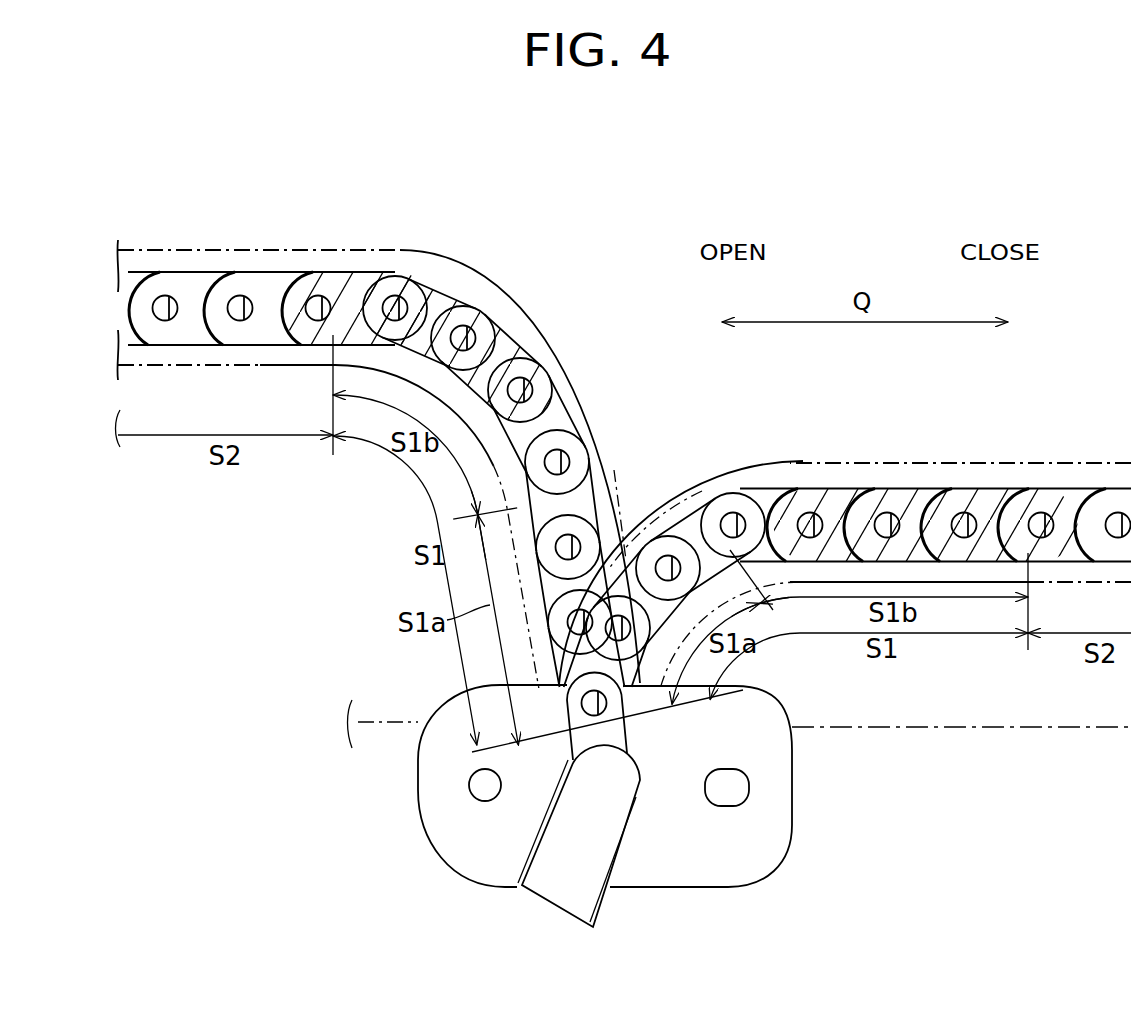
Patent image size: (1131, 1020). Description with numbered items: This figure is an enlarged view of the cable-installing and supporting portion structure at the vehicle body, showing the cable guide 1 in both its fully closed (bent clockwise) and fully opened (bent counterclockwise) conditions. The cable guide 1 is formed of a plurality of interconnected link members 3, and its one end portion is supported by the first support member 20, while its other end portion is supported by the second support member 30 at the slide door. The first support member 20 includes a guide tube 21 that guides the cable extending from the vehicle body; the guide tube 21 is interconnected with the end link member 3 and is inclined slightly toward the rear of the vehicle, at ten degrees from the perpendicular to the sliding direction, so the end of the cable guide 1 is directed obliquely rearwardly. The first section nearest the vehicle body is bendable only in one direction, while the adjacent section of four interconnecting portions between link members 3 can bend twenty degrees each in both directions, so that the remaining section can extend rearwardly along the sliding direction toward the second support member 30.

The cable guide 1 is at (629, 435).
The link member 3 is at (240, 335).
The second support member 30 is at (545, 316).
The first support member 20 is at (758, 844).
The guide tube 21 is at (613, 733).